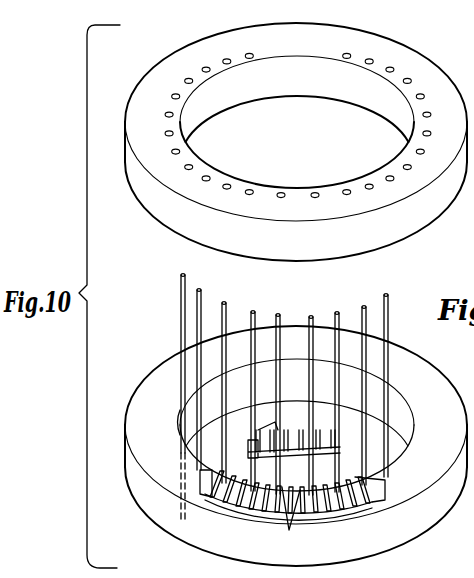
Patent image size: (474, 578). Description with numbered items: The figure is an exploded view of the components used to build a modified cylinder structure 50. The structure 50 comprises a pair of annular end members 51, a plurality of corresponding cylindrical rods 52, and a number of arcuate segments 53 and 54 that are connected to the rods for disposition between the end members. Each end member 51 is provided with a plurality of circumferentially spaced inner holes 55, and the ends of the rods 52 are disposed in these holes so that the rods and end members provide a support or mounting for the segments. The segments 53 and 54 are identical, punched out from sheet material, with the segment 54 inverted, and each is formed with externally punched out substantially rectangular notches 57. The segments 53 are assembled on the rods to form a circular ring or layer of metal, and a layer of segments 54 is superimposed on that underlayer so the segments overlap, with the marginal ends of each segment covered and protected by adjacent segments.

The structure 50 is at (137, 247).
The annular end member 51 is at (139, 82).
The cylindrical rod 52 is at (385, 293).
The arcuate segment 53 is at (292, 428).
The arcuate segment 54 is at (286, 522).
The inner hole 55 is at (229, 181).
The notch 57 is at (186, 500).